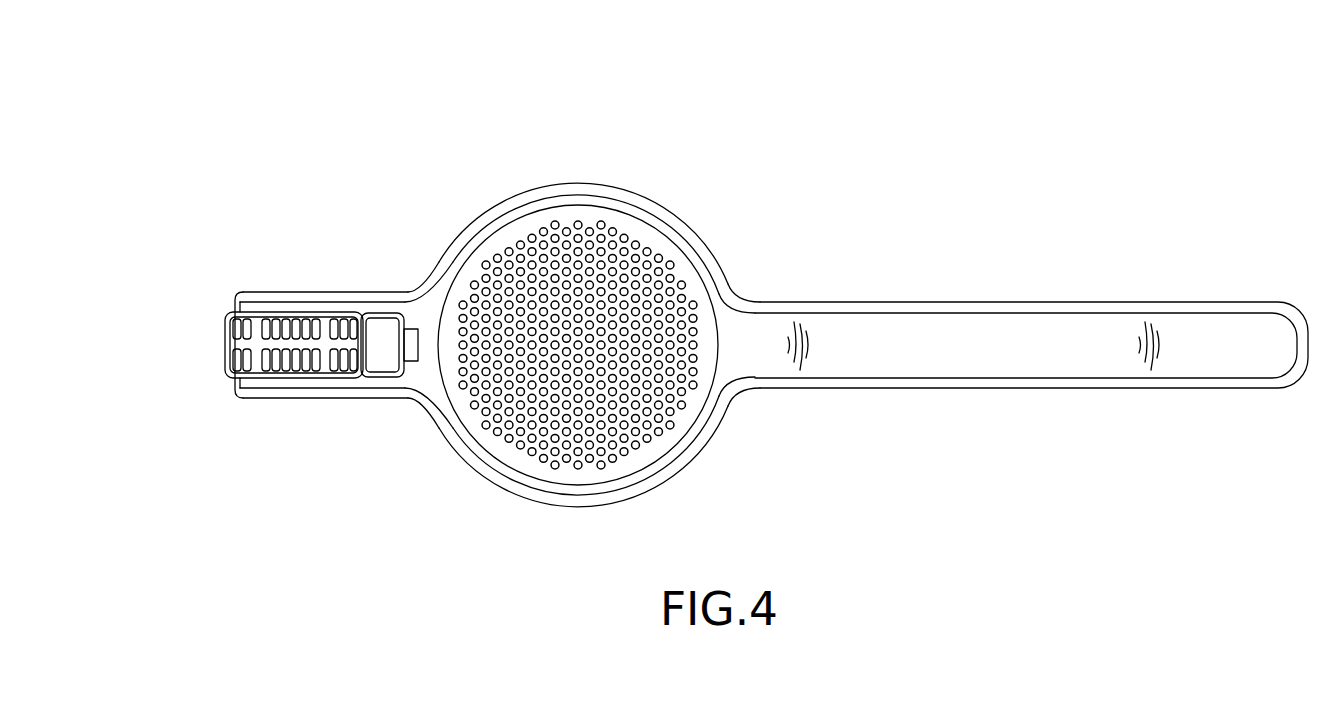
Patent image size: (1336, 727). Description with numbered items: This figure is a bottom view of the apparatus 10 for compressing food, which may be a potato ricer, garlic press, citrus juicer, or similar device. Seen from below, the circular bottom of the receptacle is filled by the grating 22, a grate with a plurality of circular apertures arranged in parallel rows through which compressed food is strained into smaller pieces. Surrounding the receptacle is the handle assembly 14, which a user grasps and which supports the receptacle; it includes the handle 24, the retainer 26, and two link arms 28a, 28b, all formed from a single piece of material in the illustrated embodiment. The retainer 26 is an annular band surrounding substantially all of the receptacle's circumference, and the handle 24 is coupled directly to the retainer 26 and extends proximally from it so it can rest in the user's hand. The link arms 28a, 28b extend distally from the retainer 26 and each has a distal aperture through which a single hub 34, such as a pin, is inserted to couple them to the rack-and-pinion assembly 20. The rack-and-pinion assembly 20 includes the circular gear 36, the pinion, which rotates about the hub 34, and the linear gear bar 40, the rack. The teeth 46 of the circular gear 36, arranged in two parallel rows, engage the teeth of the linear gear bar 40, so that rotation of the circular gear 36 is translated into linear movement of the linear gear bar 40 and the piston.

The apparatus 10 is at (648, 106).
The handle assembly 14 is at (947, 278).
The rack-and-pinion assembly 20 is at (187, 338).
The grating 22 is at (663, 441).
The handle 24 is at (995, 357).
The retainer 26 is at (667, 219).
The link arm 28a is at (330, 306).
The link arm 28b is at (337, 386).
The hub 34 is at (282, 292).
The circular gear 36 is at (232, 362).
The linear gear bar 40 is at (382, 352).
The teeth 46 is at (292, 372).